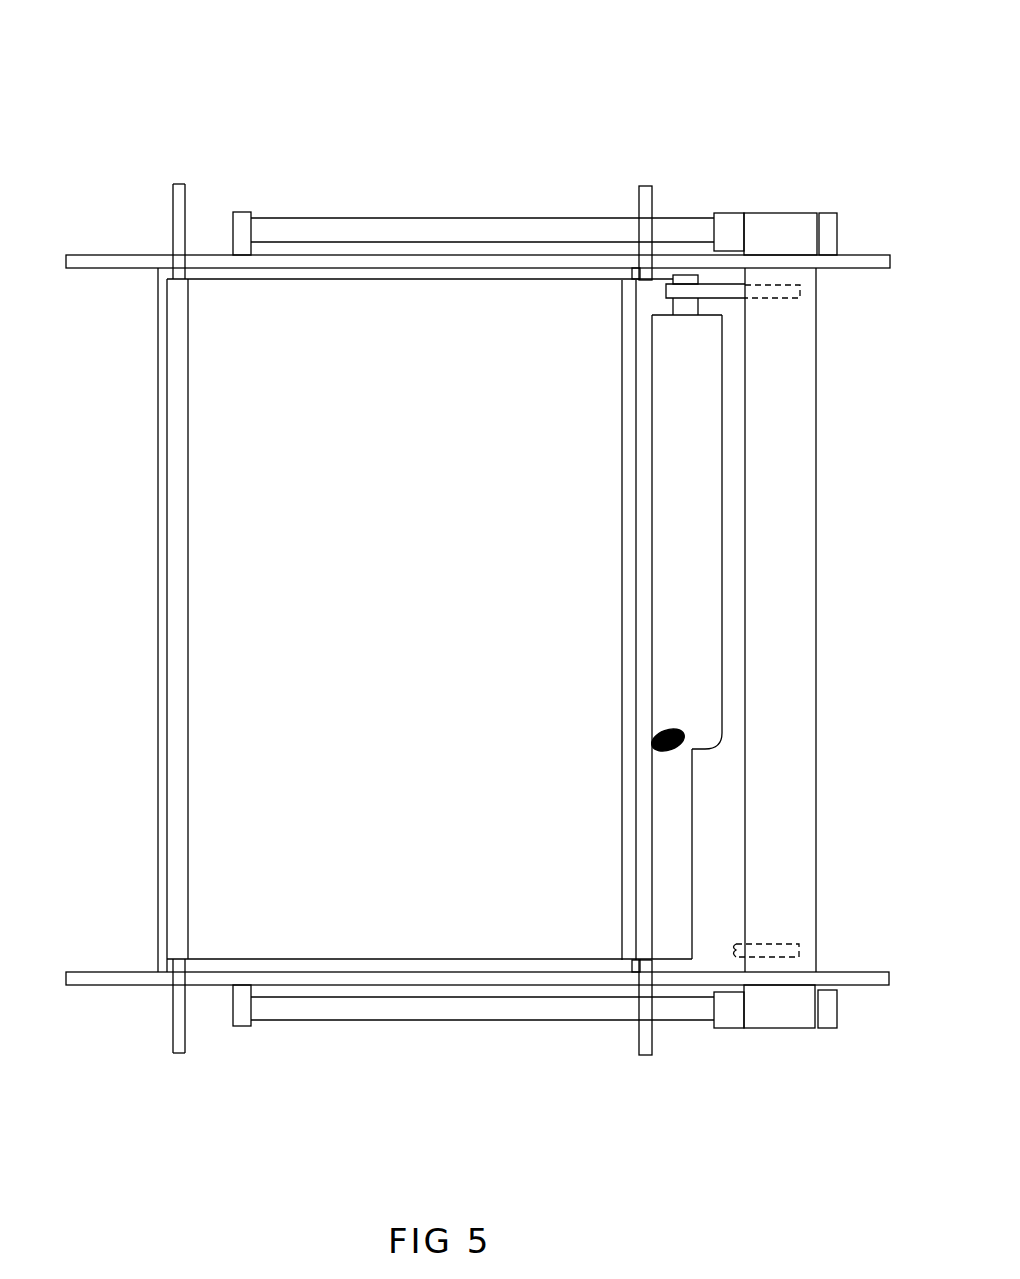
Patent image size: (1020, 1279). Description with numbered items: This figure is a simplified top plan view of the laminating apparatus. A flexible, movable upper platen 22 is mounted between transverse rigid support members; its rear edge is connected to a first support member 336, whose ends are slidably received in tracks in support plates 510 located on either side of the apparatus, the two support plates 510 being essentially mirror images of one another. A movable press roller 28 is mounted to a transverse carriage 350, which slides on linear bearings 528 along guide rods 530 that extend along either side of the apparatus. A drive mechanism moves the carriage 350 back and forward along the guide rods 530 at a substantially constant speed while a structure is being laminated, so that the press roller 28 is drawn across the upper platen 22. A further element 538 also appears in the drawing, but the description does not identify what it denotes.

The support plate 510 is at (478, 579).
The upper platen 22 is at (425, 493).
The guide rod 530 is at (473, 580).
The linear bearing 528 is at (744, 680).
The transverse carriage 350 is at (828, 620).
The press roller 28 is at (724, 352).
The first support member 336 is at (692, 848).
The frame side rail 538 is at (112, 620).